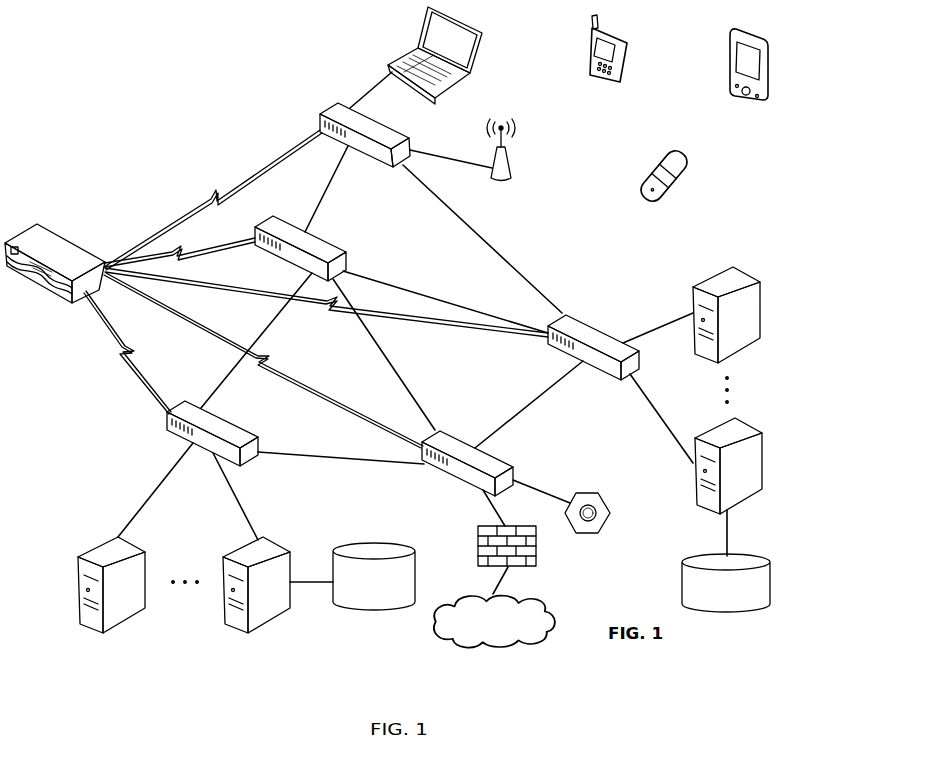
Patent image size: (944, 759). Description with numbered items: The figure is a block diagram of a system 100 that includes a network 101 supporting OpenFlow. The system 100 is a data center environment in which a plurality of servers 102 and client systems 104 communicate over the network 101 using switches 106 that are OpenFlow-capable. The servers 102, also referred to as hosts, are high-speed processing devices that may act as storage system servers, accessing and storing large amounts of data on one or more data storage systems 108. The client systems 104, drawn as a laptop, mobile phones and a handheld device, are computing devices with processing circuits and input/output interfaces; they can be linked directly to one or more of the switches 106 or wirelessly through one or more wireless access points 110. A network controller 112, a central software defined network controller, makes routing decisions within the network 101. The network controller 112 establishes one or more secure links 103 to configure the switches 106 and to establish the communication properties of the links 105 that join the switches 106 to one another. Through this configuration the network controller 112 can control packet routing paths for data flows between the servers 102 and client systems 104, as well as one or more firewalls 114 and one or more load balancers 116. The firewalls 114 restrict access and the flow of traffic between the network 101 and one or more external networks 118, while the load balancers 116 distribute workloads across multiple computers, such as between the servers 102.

The system 100 is at (59, 43).
The network 101 is at (255, 112).
The servers 102 is at (134, 541).
The secure links 103 is at (206, 191).
The client systems 104 is at (468, 22).
The links 105 is at (343, 167).
The switches 106 is at (408, 147).
The data storage systems 108 is at (551, 577).
The wireless access points 110 is at (519, 155).
The network controller 112 is at (40, 227).
The firewalls 114 is at (478, 528).
The load balancers 116 is at (590, 493).
The external networks 118 is at (494, 622).